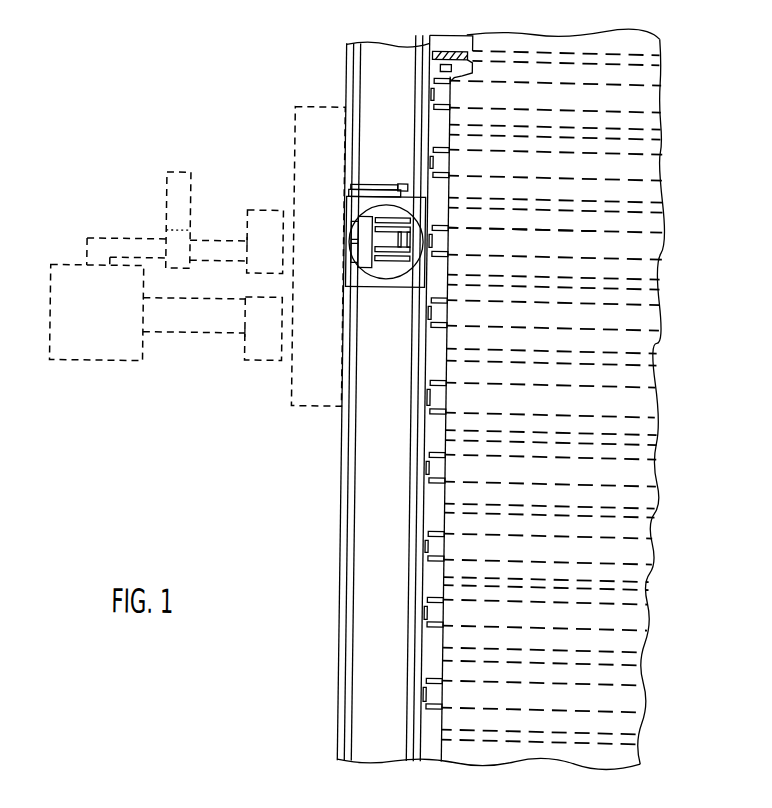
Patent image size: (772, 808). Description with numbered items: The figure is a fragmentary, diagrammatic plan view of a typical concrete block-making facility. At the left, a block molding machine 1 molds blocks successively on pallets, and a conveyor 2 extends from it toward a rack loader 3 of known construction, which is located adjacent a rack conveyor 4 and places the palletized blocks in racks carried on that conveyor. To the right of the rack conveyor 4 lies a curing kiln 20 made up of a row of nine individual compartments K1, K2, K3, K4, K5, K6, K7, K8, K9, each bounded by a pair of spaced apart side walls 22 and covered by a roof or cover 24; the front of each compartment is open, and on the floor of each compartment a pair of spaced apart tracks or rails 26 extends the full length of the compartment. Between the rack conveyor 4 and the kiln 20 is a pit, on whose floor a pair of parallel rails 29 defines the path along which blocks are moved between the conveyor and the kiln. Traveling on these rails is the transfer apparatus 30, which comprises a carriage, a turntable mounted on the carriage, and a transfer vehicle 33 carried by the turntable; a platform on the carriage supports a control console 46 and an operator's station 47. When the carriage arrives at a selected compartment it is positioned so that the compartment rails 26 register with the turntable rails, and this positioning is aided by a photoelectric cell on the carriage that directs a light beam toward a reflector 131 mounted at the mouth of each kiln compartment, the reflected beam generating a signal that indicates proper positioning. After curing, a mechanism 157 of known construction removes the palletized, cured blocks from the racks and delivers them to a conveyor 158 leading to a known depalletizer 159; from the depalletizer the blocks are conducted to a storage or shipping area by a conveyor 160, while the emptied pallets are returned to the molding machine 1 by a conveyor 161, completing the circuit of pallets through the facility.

The block molding machine 1 is at (100, 366).
The conveyor 2 is at (206, 336).
The rack loader 3 is at (262, 366).
The rack conveyor 4 is at (275, 418).
The curing kiln 20 is at (690, 355).
The side walls 22 is at (630, 68).
The roof or cover 24 is at (539, 109).
The rails 26 is at (612, 257).
The rails 29 is at (412, 562).
The transfer apparatus 30 is at (389, 302).
The transfer vehicle 33 is at (397, 210).
The control console 46 is at (365, 184).
The operator's station 47 is at (401, 184).
The reflector 131 is at (436, 68).
The mechanism for removing cured blocks 157 is at (280, 211).
The conveyor 158 is at (214, 241).
The depalletizer 159 is at (165, 239).
The conveyor 160 is at (164, 190).
The conveyor 161 is at (83, 242).
The kiln compartment K1 is at (658, 97).
The kiln compartment K2 is at (659, 172).
The kiln compartment K3 is at (660, 243).
The kiln compartment K4 is at (657, 320).
The kiln compartment K5 is at (655, 405).
The kiln compartment K6 is at (657, 473).
The kiln compartment K7 is at (652, 552).
The kiln compartment K8 is at (650, 617).
The kiln compartment K9 is at (642, 700).